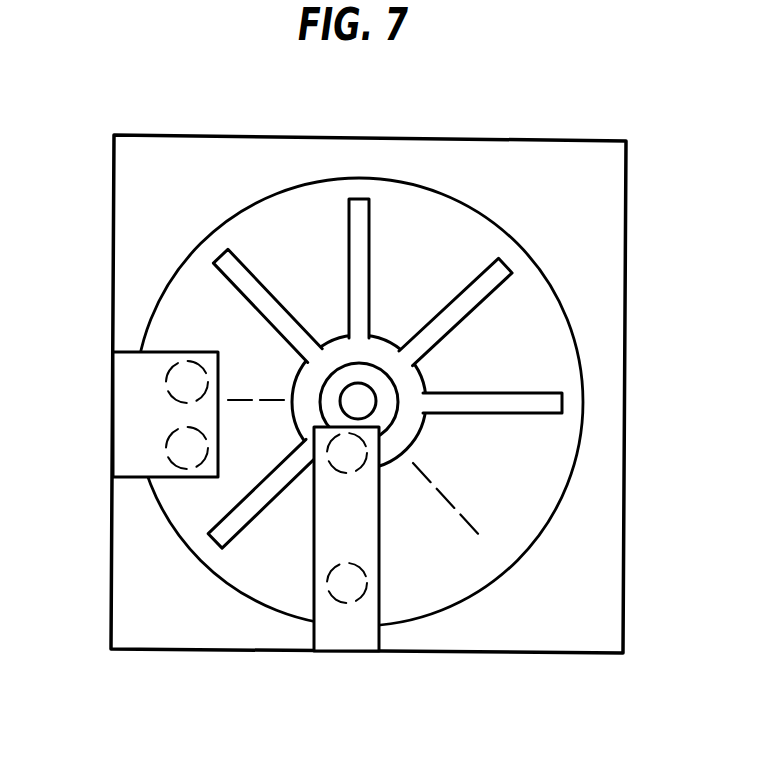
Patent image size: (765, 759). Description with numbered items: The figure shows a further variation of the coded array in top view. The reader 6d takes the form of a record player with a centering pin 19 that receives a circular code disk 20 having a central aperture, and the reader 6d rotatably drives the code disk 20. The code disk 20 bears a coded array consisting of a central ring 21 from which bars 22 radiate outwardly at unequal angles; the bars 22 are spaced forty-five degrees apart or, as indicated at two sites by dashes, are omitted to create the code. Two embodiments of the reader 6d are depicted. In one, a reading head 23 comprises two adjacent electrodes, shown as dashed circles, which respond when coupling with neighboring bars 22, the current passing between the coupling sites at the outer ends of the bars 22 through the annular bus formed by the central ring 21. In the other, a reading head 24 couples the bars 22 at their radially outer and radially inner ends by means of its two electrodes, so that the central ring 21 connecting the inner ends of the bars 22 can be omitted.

The reader 6d is at (588, 198).
The centering pin 19 is at (362, 401).
The code disk 20 is at (505, 520).
The central ring 21 is at (395, 342).
The bars 22 is at (374, 216).
The reading head 23 is at (138, 412).
The reading head 24 is at (335, 547).